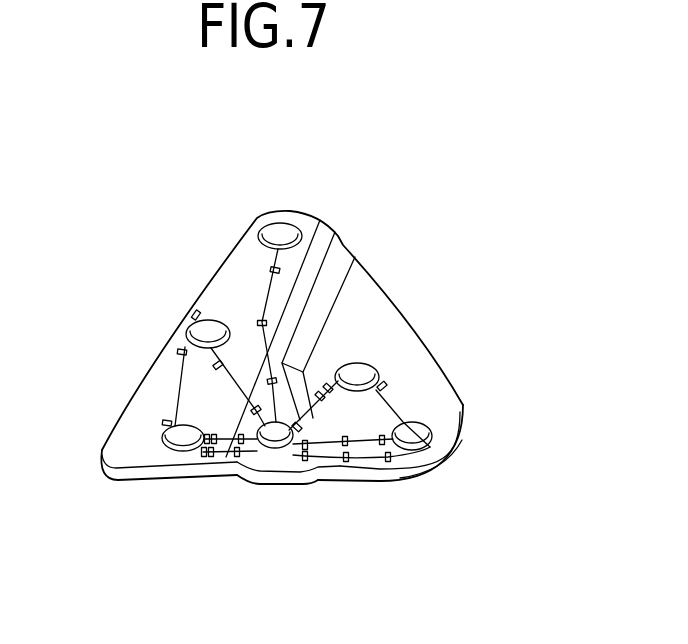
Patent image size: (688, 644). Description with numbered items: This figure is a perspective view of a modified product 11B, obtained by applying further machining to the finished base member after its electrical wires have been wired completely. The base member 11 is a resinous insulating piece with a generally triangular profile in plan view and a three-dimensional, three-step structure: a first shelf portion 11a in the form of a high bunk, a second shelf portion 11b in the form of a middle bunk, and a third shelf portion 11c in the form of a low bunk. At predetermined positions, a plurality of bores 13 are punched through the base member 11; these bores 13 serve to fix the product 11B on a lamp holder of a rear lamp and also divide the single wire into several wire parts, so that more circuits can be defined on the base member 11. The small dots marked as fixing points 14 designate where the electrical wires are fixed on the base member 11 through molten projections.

The base member 11 is at (404, 328).
The first shelf portion 11a is at (123, 456).
The second shelf portion 11b is at (243, 466).
The modified product 11B is at (269, 478).
The third shelf portion 11c is at (437, 412).
The bores 13 is at (283, 230).
The fixing points 14 is at (197, 316).